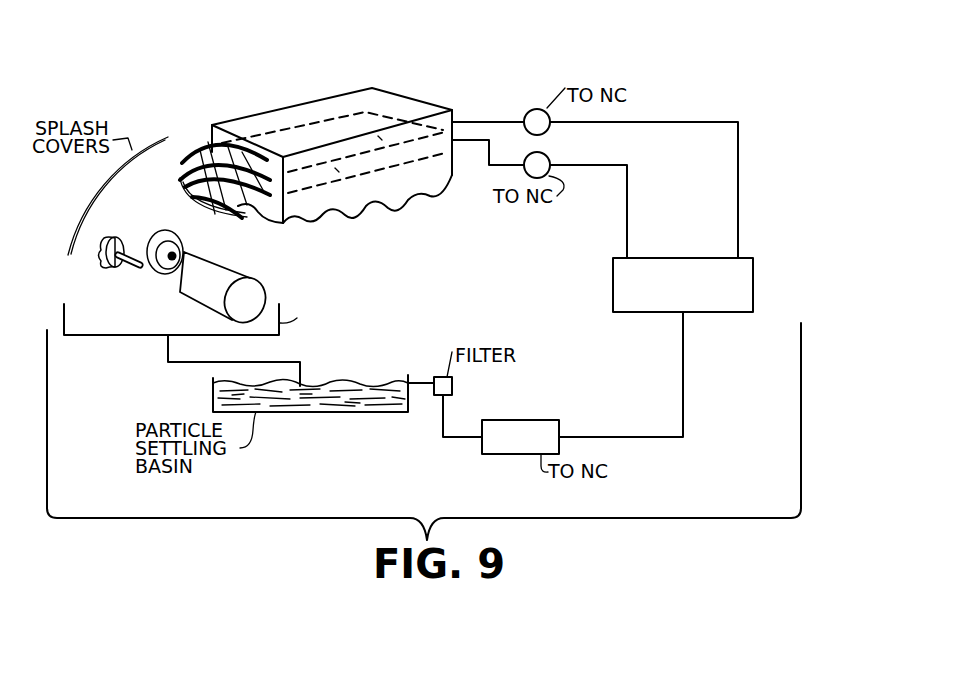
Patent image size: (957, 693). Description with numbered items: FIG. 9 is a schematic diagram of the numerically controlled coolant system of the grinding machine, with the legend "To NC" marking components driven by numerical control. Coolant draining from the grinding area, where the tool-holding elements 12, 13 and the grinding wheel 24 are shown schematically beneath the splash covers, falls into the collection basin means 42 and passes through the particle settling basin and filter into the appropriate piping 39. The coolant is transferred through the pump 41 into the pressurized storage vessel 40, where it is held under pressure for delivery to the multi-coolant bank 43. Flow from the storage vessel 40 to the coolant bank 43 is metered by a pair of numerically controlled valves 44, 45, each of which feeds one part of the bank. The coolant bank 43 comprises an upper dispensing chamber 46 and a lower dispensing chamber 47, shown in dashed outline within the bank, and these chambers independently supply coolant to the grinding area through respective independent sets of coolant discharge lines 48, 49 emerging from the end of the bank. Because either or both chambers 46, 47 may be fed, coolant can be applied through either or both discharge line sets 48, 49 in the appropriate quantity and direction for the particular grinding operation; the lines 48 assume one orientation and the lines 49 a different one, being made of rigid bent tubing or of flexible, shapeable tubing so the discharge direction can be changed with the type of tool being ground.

The spindle ring 12 is at (154, 282).
The knob 13 is at (133, 268).
The grinding wheel 24 is at (238, 272).
The piping 39 is at (684, 380).
The pressurized storage vessel 40 is at (754, 258).
The pump 41 is at (550, 419).
The collection basin means 42 is at (90, 338).
The multi-coolant bank 43 is at (341, 82).
The numerically controlled valve 44 is at (548, 153).
The numerically controlled valve 45 is at (526, 110).
The upper dispensing chamber 46 is at (380, 138).
The lower dispensing chamber 47 is at (337, 170).
The coolant discharge lines 48 is at (217, 126).
The coolant discharge lines 49 is at (213, 198).